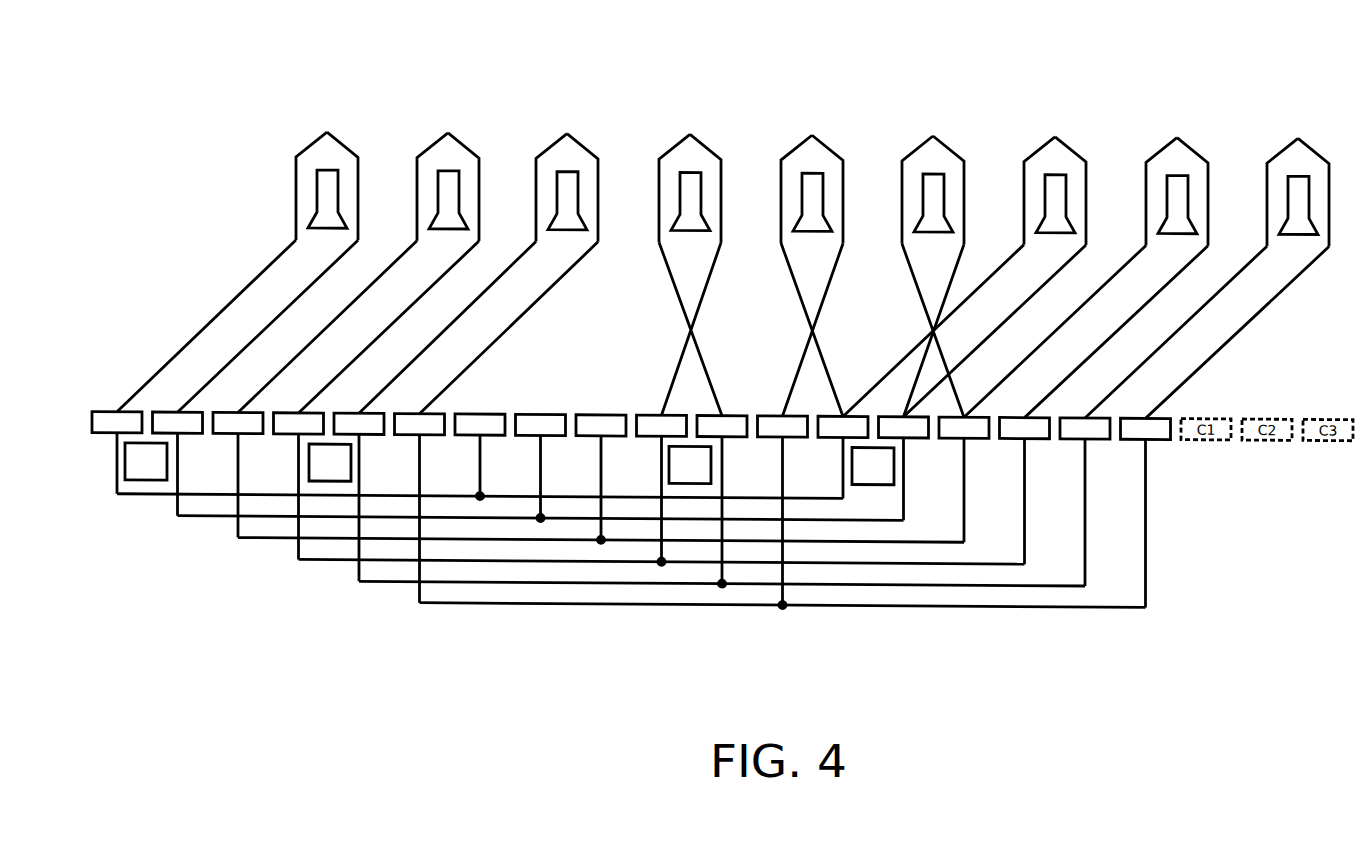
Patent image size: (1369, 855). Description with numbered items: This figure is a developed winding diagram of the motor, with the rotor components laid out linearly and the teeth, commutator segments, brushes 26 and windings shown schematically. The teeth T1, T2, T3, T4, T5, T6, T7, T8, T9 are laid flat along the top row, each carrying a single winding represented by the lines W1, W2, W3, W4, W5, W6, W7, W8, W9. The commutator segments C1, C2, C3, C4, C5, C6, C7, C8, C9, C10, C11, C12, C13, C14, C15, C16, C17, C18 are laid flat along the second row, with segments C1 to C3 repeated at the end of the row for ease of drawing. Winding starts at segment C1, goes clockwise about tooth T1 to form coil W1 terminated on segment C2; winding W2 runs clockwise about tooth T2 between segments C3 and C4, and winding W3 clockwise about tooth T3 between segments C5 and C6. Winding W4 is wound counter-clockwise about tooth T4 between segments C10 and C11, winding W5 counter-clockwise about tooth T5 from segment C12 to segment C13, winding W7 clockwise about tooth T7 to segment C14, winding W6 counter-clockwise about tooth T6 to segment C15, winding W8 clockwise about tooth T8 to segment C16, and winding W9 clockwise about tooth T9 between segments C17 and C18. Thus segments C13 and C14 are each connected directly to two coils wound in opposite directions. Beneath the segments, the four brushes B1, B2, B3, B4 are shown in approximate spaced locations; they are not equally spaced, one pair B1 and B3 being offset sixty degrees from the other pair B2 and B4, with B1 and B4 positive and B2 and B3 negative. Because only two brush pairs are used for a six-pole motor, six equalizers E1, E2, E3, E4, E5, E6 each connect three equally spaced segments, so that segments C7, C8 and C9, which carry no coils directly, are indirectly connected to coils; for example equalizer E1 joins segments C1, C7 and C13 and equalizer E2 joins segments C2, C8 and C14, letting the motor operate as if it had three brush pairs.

The winding W1 is at (237, 236).
The winding W2 is at (358, 237).
The winding W3 is at (478, 237).
The winding W4 is at (685, 238).
The winding W5 is at (807, 239).
The winding W6 is at (928, 240).
The winding W7 is at (964, 240).
The winding W8 is at (1086, 241).
The winding W9 is at (1207, 242).
The tooth T1 is at (327, 199).
The tooth T2 is at (448, 200).
The tooth T3 is at (567, 201).
The tooth T4 is at (690, 201).
The tooth T5 is at (812, 202).
The tooth T6 is at (933, 203).
The tooth T7 is at (1055, 204).
The tooth T8 is at (1177, 204).
The tooth T9 is at (1298, 205).
The commutator segment C1 is at (117, 453).
The commutator segment C2 is at (178, 464).
The commutator segment C3 is at (238, 474).
The commutator segment C4 is at (299, 486).
The commutator segment C5 is at (359, 497).
The commutator segment C6 is at (420, 508).
The commutator segment C7 is at (480, 457).
The commutator segment C8 is at (541, 467).
The commutator segment C9 is at (601, 479).
The commutator segment C10 is at (662, 490).
The commutator segment C11 is at (722, 502).
The commutator segment C12 is at (783, 512).
The commutator segment C13 is at (843, 457).
The commutator segment C14 is at (904, 469).
The commutator segment C15 is at (964, 479).
The commutator segment C16 is at (1025, 490).
The commutator segment C17 is at (1085, 502).
The commutator segment C18 is at (1146, 512).
The brush B1 is at (146, 461).
The brush B2 is at (330, 462).
The brush B3 is at (690, 464).
The brush B4 is at (873, 466).
The equalizer E1 is at (115, 478).
The equalizer E2 is at (177, 500).
The equalizer E3 is at (237, 525).
The equalizer E4 is at (298, 545).
The equalizer E5 is at (359, 573).
The equalizer E6 is at (420, 598).
The brushes 26 is at (96, 461).